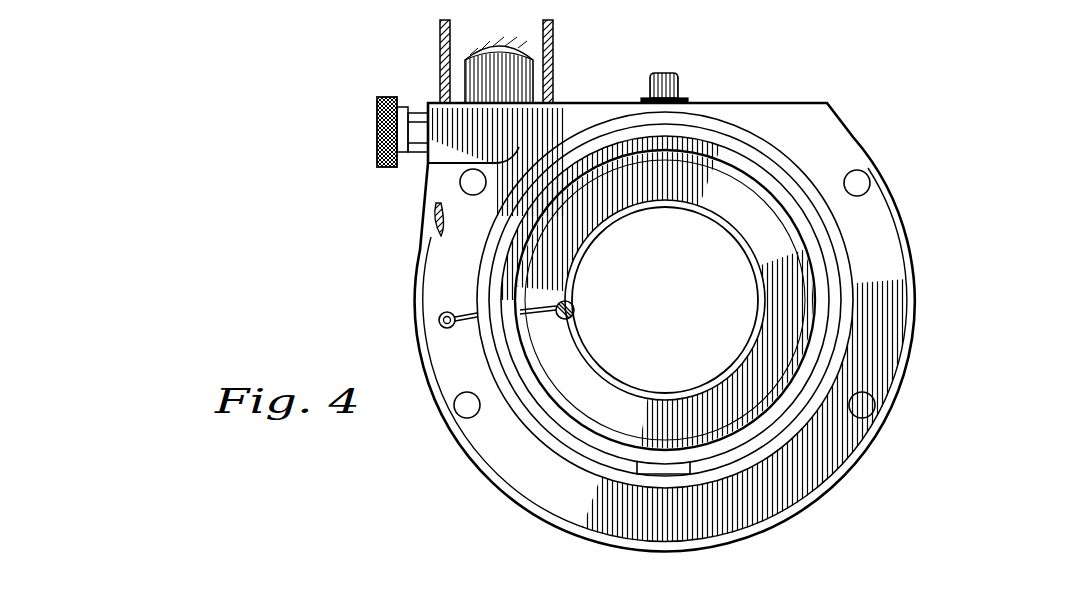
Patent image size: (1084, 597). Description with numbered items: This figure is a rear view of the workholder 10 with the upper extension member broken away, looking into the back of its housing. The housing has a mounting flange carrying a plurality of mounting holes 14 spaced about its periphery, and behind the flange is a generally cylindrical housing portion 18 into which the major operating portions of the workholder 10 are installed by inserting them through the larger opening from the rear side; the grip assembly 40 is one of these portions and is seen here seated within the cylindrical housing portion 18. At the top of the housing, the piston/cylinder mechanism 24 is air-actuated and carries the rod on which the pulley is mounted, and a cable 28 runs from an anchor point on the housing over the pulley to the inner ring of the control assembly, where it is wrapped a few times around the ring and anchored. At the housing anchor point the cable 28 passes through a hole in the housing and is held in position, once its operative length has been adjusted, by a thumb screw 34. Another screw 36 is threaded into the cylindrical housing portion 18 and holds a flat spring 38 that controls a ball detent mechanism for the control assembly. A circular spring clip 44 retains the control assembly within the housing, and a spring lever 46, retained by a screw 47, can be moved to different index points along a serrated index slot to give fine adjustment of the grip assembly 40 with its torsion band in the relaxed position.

The workholder 10 is at (418, 240).
The mounting holes 14 is at (865, 175).
The cylindrical housing portion 18 is at (816, 170).
The piston/cylinder mechanism 24 is at (483, 66).
The cable 28 is at (440, 43).
The thumb screw 34 is at (378, 100).
The screw 36 is at (680, 84).
The flat spring 38 is at (690, 100).
The grip assembly 40 is at (817, 293).
The circular spring clip 44 is at (778, 436).
The spring lever 46 is at (450, 330).
The screw 47 is at (565, 322).